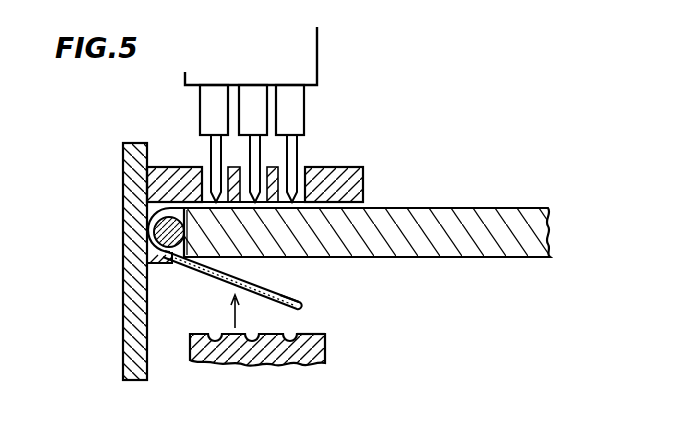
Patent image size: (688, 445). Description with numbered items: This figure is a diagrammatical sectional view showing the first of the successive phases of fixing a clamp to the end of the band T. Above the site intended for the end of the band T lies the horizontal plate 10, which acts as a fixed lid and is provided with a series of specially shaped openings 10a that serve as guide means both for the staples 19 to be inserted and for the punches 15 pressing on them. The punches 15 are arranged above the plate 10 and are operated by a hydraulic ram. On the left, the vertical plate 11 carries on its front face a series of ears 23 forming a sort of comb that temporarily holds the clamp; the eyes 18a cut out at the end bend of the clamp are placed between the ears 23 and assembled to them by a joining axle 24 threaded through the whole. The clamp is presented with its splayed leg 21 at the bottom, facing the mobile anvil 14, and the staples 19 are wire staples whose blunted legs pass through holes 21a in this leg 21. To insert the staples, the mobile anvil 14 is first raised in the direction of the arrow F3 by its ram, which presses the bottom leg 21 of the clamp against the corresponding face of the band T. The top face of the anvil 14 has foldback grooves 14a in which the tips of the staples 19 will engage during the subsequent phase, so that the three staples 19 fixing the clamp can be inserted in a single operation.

The horizontal plate 10 is at (347, 180).
The openings 10a is at (300, 165).
The vertical plate 11 is at (130, 185).
The anvil 14 is at (313, 364).
The foldback grooves 14a is at (328, 344).
The punches 15 is at (213, 115).
The staples 19 is at (214, 158).
The eyes 18a is at (150, 257).
The splayed leg 21 is at (303, 308).
The holes 21a is at (290, 296).
The ears 23 is at (172, 265).
The joining axle 24 is at (153, 237).
The band T is at (508, 220).
The arrow F3 is at (248, 312).